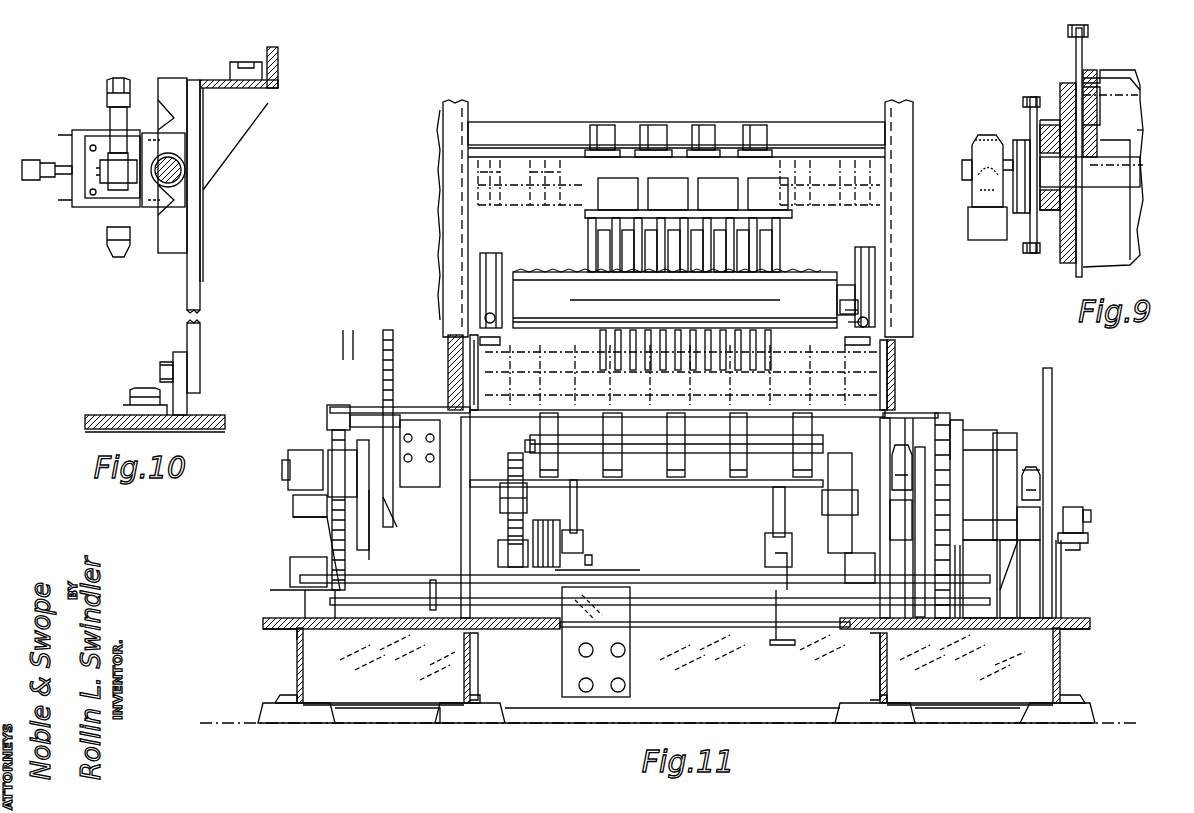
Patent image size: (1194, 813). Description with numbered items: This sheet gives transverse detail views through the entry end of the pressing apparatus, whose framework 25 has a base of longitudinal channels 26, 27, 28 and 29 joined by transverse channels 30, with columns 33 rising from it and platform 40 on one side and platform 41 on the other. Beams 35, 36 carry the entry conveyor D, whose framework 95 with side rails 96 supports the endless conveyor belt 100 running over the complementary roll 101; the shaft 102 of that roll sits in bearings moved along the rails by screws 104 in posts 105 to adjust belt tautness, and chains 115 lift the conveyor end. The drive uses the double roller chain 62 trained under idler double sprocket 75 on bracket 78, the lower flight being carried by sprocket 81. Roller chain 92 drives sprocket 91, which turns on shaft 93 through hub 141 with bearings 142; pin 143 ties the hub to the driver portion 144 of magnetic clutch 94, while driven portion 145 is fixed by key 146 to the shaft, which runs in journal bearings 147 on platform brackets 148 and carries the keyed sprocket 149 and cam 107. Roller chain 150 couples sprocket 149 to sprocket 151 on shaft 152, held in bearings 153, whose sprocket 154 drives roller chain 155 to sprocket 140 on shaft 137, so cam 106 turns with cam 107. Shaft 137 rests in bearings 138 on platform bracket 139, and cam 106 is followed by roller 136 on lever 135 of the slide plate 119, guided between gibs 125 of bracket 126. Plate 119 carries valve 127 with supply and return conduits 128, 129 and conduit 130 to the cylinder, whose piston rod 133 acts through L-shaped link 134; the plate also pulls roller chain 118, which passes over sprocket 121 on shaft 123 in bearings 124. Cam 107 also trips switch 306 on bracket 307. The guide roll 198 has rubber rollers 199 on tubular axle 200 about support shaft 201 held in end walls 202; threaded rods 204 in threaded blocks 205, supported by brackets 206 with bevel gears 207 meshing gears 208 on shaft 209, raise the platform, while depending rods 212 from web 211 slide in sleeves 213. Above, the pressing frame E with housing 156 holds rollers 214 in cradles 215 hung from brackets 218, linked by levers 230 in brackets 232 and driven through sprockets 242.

In FIG. 11, the framework 25 is at (288, 643).
In FIG. 11, the longitudinally arranged channel 26 is at (297, 672).
In FIG. 11, the longitudinally arranged channel 27 is at (478, 703).
In FIG. 11, the longitudinally arranged channel 28 is at (880, 703).
In FIG. 11, the longitudinally arranged channel 29 is at (1060, 657).
In FIG. 11, the transversely disposed channel 30 is at (360, 690).
In FIG. 11, the column 33 is at (445, 180).
In FIG. 10, the beam 35 is at (278, 55).
In FIG. 11, the beam 35 is at (448, 363).
In FIG. 11, the beam 36 is at (895, 362).
In FIG. 10, the platform 40 is at (198, 422).
In FIG. 11, the platform 40 is at (270, 622).
In FIG. 11, the platform 41 is at (1090, 625).
In FIG. 11, the double roller chain 62 is at (546, 520).
In FIG. 11, the idler double sprocket 75 is at (583, 558).
In FIG. 11, the bracket 78 is at (610, 580).
In FIG. 11, the sprocket 81 is at (556, 660).
In FIG. 9, the sprocket 91 is at (1076, 45).
In FIG. 9, the roller chain 92 is at (1068, 32).
In FIG. 11, the roller chain 92 is at (945, 413).
In FIG. 9, the shaft 93 is at (1060, 170).
In FIG. 11, the shaft 93 is at (1032, 470).
In FIG. 9, the magnetic clutch 94 is at (1118, 118).
In FIG. 11, the magnetic clutch 94 is at (1000, 430).
In FIG. 11, the framework 95 is at (500, 325).
In FIG. 11, the side rail 96 is at (480, 350).
In FIG. 11, the endless conveyor belt 100 is at (548, 272).
In FIG. 11, the complementary roll 101 is at (808, 300).
In FIG. 11, the shaft 102 is at (872, 300).
In FIG. 11, the screw 104 is at (870, 325).
In FIG. 11, the post 105 is at (873, 312).
In FIG. 11, the cam 106 is at (385, 500).
In FIG. 11, the cam 107 is at (1045, 398).
In FIG. 11, the chain 115 is at (490, 253).
In FIG. 11, the roller chain 118 is at (375, 337).
In FIG. 10, the slide plate 119 is at (165, 98).
In FIG. 11, the sprocket 121 is at (383, 385).
In FIG. 11, the shaft 123 is at (365, 415).
In FIG. 11, the bearing 124 is at (335, 418).
In FIG. 10, the gib 125 is at (167, 80).
In FIG. 10, the bracket 126 is at (200, 277).
In FIG. 10, the valve 127 is at (74, 160).
In FIG. 10, the supply conduit 128 is at (118, 85).
In FIG. 10, the return conduit 129 is at (112, 250).
In FIG. 10, the conduit 130 is at (30, 180).
In FIG. 10, the piston rod 133 is at (186, 158).
In FIG. 10, the L-shaped link 134 is at (172, 147).
In FIG. 10, the lever 135 is at (115, 138).
In FIG. 10, the roller 136 is at (108, 185).
In FIG. 11, the shaft 137 is at (305, 468).
In FIG. 11, the bearing 138 is at (288, 478).
In FIG. 11, the platform bracket 139 is at (300, 520).
In FIG. 11, the sprocket 140 is at (330, 458).
In FIG. 9, the hub 141 is at (1062, 90).
In FIG. 9, the bearing 142 is at (1040, 125).
In FIG. 9, the pin 143 is at (1122, 90).
In FIG. 9, the driver portion 144 is at (1098, 90).
In FIG. 9, the driven portion 145 is at (1140, 143).
In FIG. 9, the key 146 is at (1142, 165).
In FIG. 9, the journal bearing 147 is at (988, 140).
In FIG. 11, the journal bearing 147 is at (1040, 478).
In FIG. 9, the platform bracket 148 is at (992, 240).
In FIG. 11, the platform bracket 148 is at (1040, 560).
In FIG. 9, the sprocket 149 is at (1030, 255).
In FIG. 9, the roller chain 150 is at (1028, 97).
In FIG. 11, the roller chain 150 is at (920, 447).
In FIG. 11, the sprocket 151 is at (960, 568).
In FIG. 11, the shaft 152 is at (668, 575).
In FIG. 11, the bearing 153 is at (290, 572).
In FIG. 11, the sprocket 154 is at (340, 628).
In FIG. 11, the roller chain 155 is at (335, 545).
In FIG. 11, the housing 156 is at (440, 215).
In FIG. 11, the guide roll 198 is at (538, 428).
In FIG. 11, the rubber roller 199 is at (676, 478).
In FIG. 11, the tubular axle 200 is at (642, 456).
In FIG. 11, the support shaft 201 is at (525, 446).
In FIG. 11, the end wall 202 is at (508, 468).
In FIG. 11, the threaded rod 204 is at (500, 490).
In FIG. 11, the threaded block 205 is at (500, 506).
In FIG. 11, the bracket 206 is at (505, 555).
In FIG. 11, the bevel gear 207 is at (530, 600).
In FIG. 11, the bevel gear 208 is at (495, 600).
In FIG. 11, the shaft 209 is at (700, 598).
In FIG. 11, the web 211 is at (690, 487).
In FIG. 11, the depending rod 212 is at (577, 507).
In FIG. 11, the sleeve 213 is at (583, 538).
In FIG. 11, the roller 214 is at (602, 262).
In FIG. 11, the cradle 215 is at (590, 218).
In FIG. 11, the bracket 218 is at (726, 187).
In FIG. 11, the lever 230 is at (515, 125).
In FIG. 11, the bracket 232 is at (700, 125).
In FIG. 11, the sprocket 242 is at (685, 365).
In FIG. 11, the switch 306 is at (1075, 510).
In FIG. 11, the bracket 307 is at (1062, 578).
In FIG. 11, the entry conveyor D is at (555, 260).
In FIG. 11, the pressing frame E is at (590, 118).